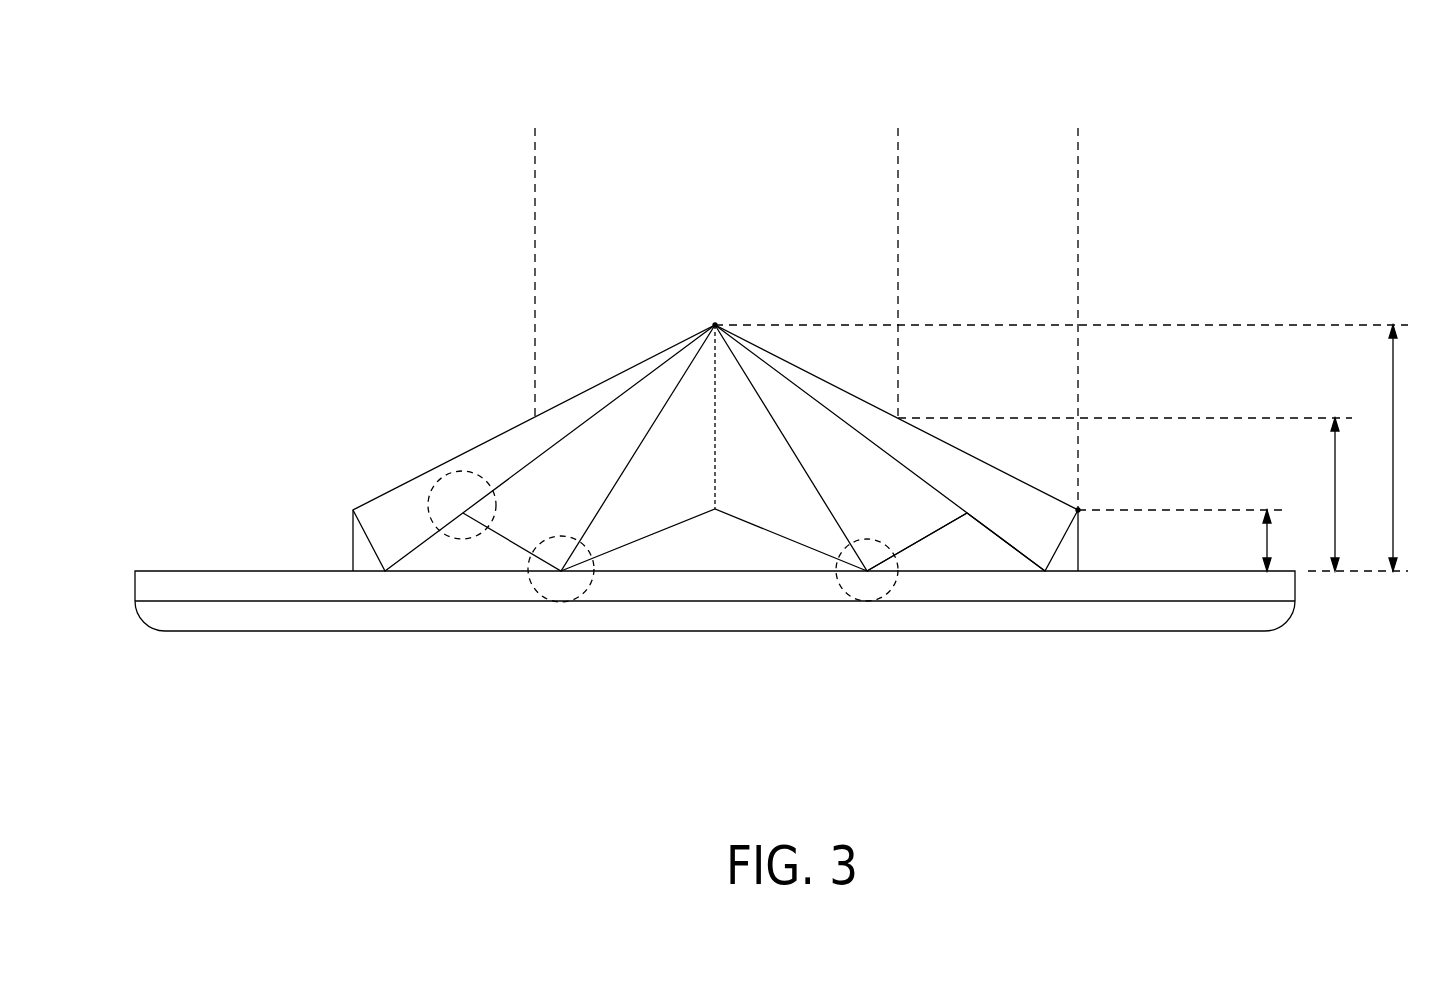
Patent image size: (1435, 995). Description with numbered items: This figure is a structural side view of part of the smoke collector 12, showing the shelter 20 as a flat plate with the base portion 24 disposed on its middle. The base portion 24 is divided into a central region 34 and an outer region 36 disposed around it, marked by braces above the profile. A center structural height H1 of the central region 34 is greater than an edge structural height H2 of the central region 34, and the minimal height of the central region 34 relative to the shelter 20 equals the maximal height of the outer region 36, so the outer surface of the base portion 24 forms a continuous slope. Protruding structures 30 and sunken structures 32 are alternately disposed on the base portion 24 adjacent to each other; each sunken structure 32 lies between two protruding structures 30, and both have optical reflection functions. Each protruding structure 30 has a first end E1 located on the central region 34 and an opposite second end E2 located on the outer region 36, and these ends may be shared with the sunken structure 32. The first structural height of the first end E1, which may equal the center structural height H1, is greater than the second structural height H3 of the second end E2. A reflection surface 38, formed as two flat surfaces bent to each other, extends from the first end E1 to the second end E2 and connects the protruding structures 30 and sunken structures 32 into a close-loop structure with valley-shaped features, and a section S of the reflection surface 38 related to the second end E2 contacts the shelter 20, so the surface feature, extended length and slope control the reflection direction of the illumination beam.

The smoke collector 12 is at (1196, 82).
The shelter 20 is at (142, 618).
The base portion 24 is at (512, 445).
The protruding structure 30 is at (455, 548).
The sunken structure 32 is at (573, 606).
The central region 34 is at (898, 128).
The outer region 36 is at (1078, 128).
The reflection surface 38 is at (902, 512).
The first end E1 is at (712, 322).
The second end E2 is at (1081, 509).
The section S is at (843, 590).
The center structural height H1 is at (1073, 448).
The edge structural height H2 is at (1135, 494).
The second structural height H3 is at (1192, 540).